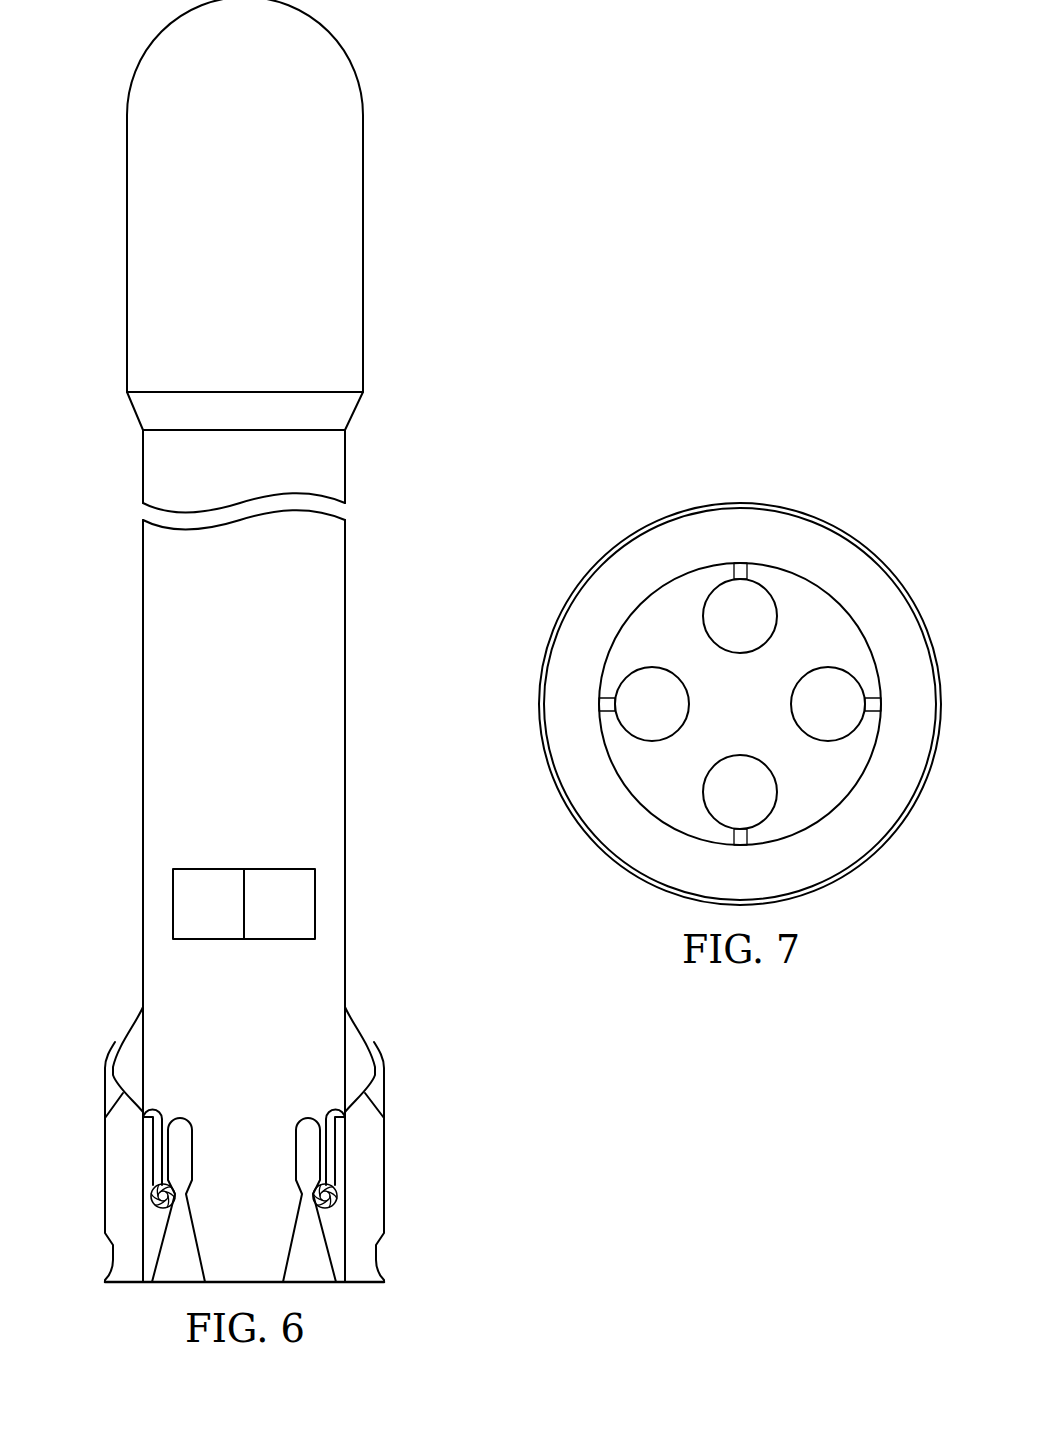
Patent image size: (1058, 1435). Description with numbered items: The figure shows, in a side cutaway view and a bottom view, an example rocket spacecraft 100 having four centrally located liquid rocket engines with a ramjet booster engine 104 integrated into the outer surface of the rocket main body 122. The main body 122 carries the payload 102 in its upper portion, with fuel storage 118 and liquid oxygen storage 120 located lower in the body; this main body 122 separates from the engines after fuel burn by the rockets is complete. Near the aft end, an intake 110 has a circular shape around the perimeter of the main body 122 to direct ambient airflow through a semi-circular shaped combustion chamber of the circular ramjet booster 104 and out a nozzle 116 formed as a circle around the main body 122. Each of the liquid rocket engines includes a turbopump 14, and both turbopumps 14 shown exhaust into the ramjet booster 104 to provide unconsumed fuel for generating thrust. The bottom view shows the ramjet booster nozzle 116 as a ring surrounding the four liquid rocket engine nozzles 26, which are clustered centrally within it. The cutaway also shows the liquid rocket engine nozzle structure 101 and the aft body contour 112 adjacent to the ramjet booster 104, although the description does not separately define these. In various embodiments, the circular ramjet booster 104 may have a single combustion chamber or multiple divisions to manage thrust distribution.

In FIG. 6, the rocket spacecraft 100 is at (100, 546).
In FIG. 6, the payload 102 is at (270, 236).
In FIG. 6, the main body 122 is at (348, 468).
In FIG. 6, the liquid oxygen storage 120 is at (207, 877).
In FIG. 6, the fuel storage 118 is at (283, 877).
In FIG. 6, the intake 110 is at (368, 1002).
In FIG. 6, the aft fairing 112 is at (358, 1066).
In FIG. 6, the ramjet booster engine 104 is at (375, 1137).
In FIG. 6, the turbopump 14 is at (334, 1198).
In FIG. 6, the engine nozzle 101 is at (290, 1240).
In FIG. 7, the nozzle 116 is at (743, 505).
In FIG. 7, the liquid rocket engine nozzle 26 is at (725, 632).